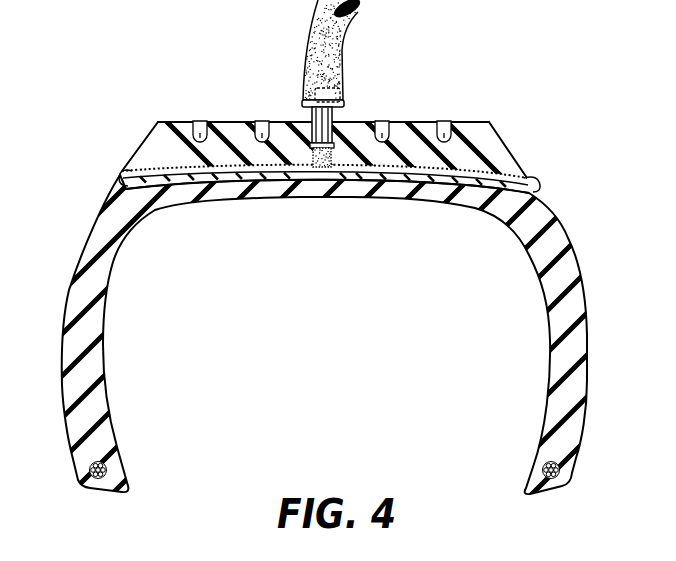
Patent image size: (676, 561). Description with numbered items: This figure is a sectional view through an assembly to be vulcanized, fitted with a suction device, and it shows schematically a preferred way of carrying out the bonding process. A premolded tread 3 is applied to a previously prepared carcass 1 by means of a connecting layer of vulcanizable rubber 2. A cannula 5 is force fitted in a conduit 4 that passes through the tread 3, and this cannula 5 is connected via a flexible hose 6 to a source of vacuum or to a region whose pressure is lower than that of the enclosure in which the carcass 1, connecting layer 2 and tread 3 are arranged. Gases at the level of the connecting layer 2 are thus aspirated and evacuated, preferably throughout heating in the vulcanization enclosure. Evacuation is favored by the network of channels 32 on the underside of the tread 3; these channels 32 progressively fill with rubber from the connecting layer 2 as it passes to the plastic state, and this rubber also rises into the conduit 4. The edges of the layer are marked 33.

The carcass 1 is at (552, 236).
The connecting layer of vulcanizable rubber 2 is at (532, 184).
The premolded tread 3 is at (484, 137).
The channels 32 is at (389, 176).
The edge lips of the layer 33 is at (122, 172).
The conduit 4 is at (317, 165).
The cannula 5 is at (312, 116).
The flexible hose 6 is at (348, 31).